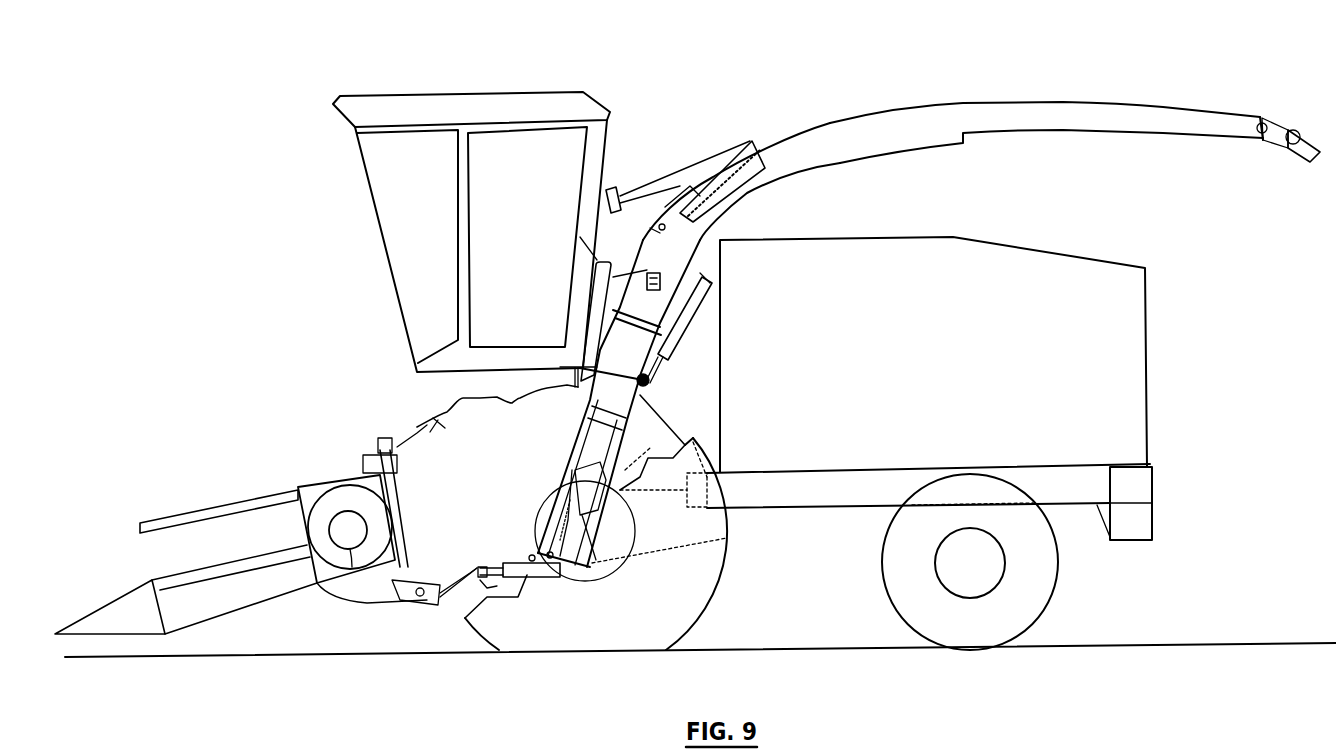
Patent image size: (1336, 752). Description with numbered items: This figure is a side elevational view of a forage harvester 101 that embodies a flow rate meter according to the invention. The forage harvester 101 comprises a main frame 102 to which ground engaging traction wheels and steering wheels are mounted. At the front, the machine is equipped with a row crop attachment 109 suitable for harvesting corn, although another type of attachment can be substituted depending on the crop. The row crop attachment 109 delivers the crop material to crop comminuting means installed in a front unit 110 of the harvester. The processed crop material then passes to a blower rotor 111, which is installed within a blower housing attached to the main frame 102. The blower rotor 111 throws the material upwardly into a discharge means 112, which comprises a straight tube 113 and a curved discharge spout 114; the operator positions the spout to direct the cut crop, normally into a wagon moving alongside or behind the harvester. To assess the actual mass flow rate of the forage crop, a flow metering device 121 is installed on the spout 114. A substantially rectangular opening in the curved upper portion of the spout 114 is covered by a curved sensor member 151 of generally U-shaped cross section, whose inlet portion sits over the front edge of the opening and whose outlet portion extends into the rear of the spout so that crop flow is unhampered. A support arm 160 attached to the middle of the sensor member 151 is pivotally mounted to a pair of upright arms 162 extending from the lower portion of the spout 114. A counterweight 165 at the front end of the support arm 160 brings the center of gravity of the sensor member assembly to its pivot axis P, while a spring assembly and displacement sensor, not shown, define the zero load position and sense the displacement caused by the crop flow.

The forage harvester 101 is at (606, 83).
The main frame 102 is at (767, 500).
The row crop attachment 109 is at (226, 488).
The front unit 110 is at (438, 427).
The blower rotor 111 is at (577, 452).
The discharge means 112 is at (981, 144).
The straight tube 113 is at (636, 350).
The curved discharge spout 114 is at (805, 158).
The flow metering device 121 is at (721, 135).
The sensor member 151 is at (733, 180).
The support arm 160 is at (666, 176).
The upright arms 162 is at (650, 228).
The counterweight 165 is at (603, 192).
The pivot axis P is at (662, 227).